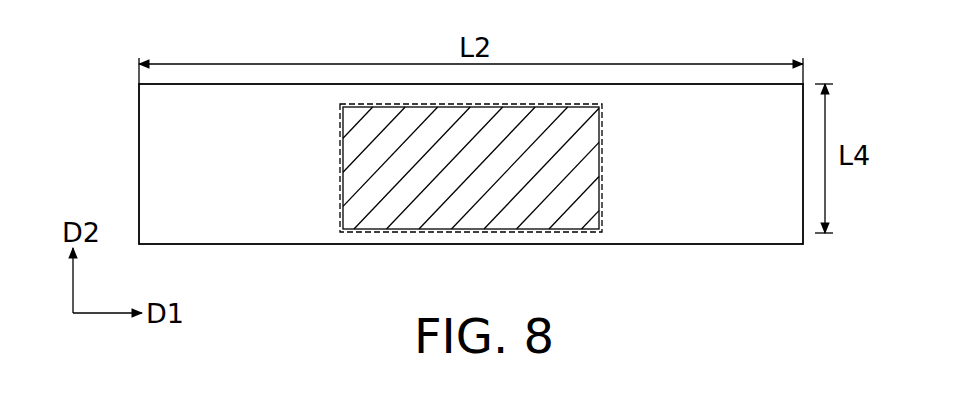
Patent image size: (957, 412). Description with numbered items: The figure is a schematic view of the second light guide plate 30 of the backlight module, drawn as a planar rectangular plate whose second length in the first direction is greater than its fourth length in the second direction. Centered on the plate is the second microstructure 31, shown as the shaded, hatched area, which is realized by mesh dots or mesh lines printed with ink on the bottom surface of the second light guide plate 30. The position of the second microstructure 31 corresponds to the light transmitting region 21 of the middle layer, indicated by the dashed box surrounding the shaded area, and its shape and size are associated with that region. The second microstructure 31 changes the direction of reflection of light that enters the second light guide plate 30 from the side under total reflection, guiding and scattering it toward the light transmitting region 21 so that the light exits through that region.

The second light guide plate 30 is at (136, 105).
The light transmitting region 21 is at (384, 229).
The second microstructure 31 is at (568, 207).